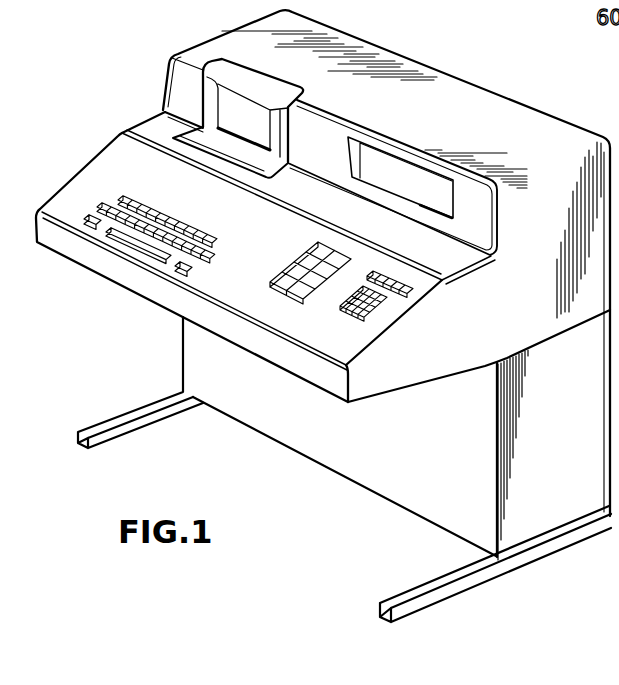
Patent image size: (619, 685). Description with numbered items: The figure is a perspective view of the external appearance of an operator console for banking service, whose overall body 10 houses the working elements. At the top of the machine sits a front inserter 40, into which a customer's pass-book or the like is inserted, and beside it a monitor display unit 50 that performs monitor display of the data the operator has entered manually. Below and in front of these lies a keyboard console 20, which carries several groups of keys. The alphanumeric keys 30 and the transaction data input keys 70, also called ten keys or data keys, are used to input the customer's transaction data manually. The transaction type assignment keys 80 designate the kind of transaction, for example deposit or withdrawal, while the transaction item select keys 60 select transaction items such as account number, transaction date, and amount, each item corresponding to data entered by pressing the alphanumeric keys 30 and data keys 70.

The cabinet / desk base 10 is at (561, 398).
The keyboard console 20 is at (70, 183).
The alphanumeric keys 30 is at (141, 200).
The front inserter 40 is at (218, 70).
The monitor display unit 50 is at (393, 163).
The transaction item select keys 60 is at (340, 250).
The transaction data input keys 70 is at (376, 312).
The transaction type assignment keys 80 is at (406, 277).